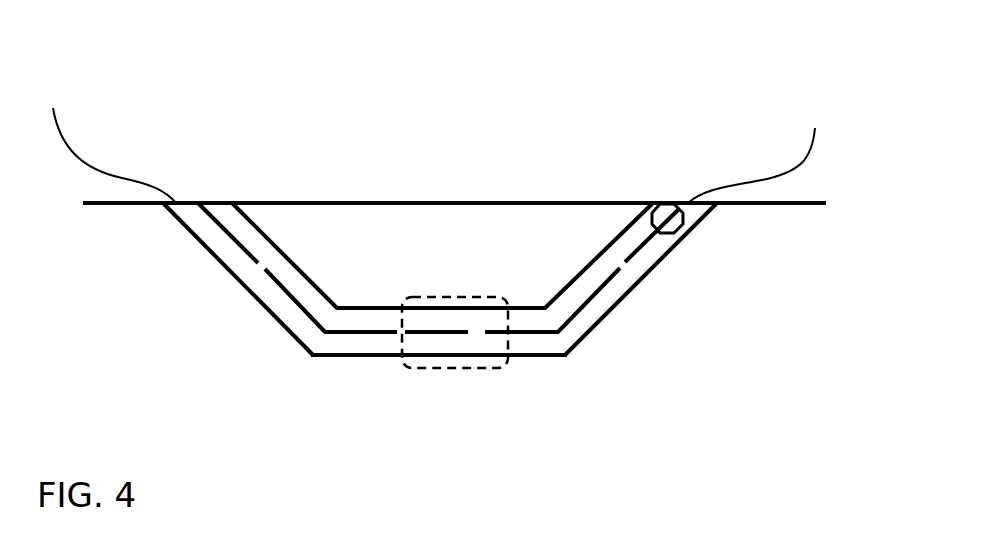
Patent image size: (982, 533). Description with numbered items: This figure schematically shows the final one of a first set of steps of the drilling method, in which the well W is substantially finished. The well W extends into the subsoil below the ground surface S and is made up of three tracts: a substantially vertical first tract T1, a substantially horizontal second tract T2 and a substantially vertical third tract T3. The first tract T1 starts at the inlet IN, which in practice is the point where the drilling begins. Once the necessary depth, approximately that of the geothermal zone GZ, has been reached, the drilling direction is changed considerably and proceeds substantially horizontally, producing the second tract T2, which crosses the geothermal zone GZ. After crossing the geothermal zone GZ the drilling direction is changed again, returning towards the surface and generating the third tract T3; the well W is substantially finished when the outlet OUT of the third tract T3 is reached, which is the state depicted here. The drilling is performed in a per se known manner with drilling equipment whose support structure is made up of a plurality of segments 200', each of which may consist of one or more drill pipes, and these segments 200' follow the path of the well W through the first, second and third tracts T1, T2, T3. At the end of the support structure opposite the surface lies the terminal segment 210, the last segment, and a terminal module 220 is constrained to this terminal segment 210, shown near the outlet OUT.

The inlet IN is at (108, 140).
The outlet OUT is at (769, 150).
The ground surface S is at (110, 205).
The first tract T1 is at (190, 233).
The second tract T2 is at (352, 305).
The third tract T3 is at (607, 309).
The well W is at (584, 354).
The geothermal zone GZ is at (450, 385).
The segment 200' is at (385, 336).
The terminal segment 210 is at (642, 252).
The terminal module 220 is at (684, 231).